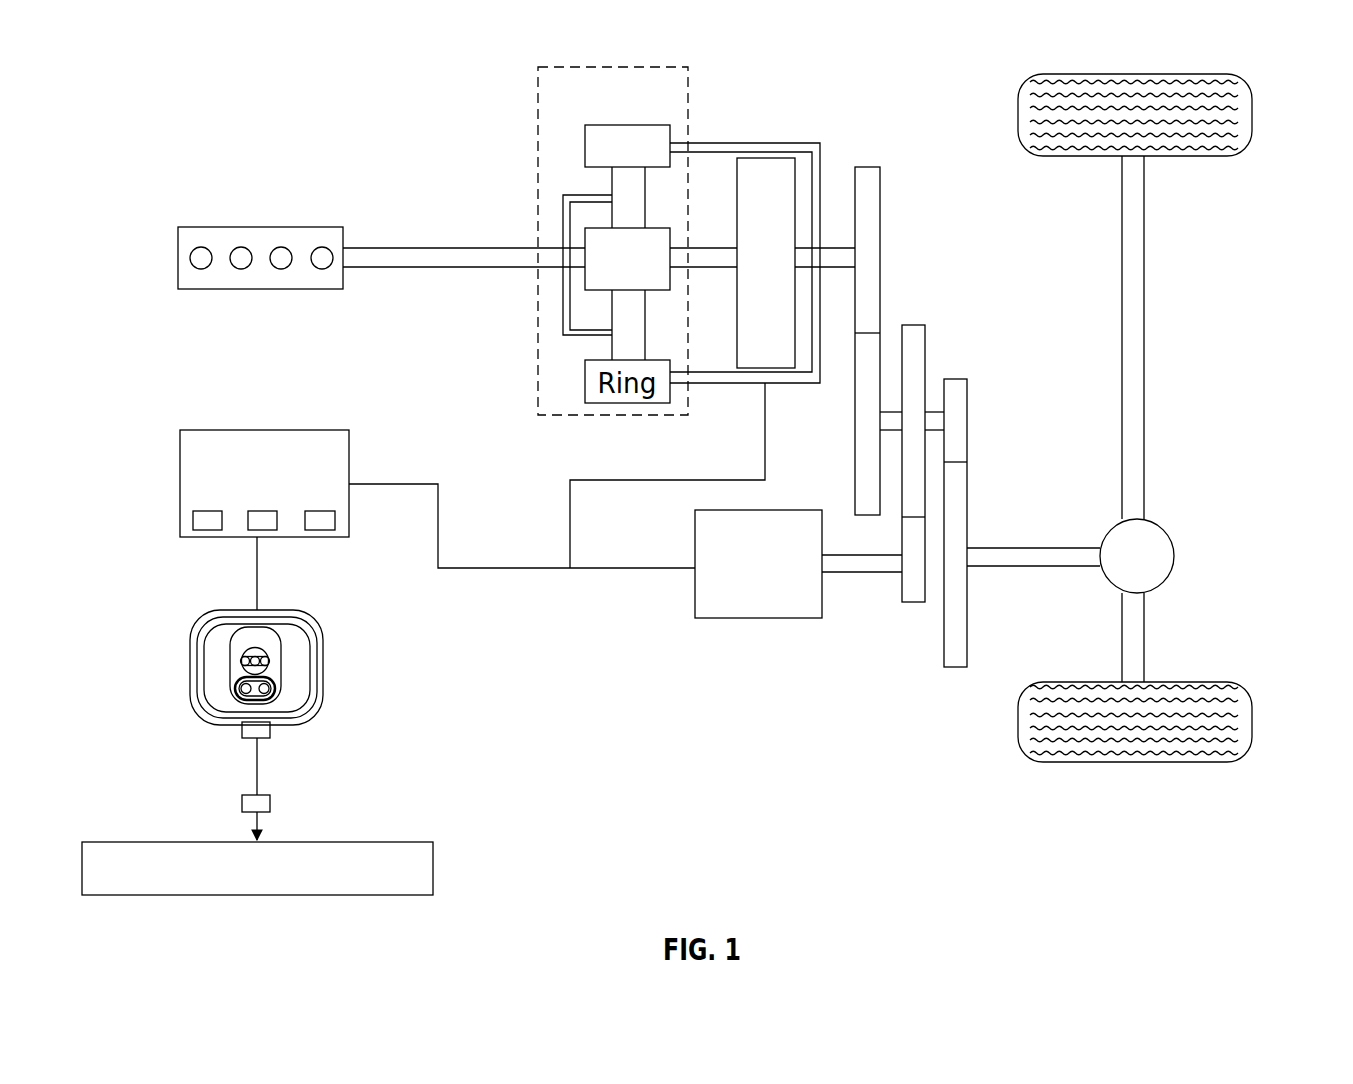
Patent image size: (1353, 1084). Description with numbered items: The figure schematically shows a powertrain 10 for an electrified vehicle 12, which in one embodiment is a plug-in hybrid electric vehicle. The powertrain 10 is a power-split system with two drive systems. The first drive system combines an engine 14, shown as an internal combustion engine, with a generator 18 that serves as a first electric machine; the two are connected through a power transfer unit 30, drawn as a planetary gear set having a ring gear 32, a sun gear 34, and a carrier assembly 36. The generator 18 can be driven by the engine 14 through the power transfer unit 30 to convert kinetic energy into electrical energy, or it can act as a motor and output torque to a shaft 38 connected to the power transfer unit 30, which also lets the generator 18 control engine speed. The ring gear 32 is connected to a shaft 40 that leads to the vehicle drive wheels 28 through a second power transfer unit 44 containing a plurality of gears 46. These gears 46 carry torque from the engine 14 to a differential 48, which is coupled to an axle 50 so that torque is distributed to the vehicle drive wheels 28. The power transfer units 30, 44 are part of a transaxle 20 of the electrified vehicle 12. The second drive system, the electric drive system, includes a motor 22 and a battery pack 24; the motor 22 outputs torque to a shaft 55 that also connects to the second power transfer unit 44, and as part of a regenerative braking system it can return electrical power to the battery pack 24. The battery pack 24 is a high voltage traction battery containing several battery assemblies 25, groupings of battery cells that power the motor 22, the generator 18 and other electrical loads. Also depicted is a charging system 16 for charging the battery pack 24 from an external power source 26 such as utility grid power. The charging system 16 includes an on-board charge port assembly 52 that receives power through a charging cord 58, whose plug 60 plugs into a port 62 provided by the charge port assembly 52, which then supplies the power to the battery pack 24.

The powertrain 10 is at (363, 97).
The electrified vehicle 12 is at (791, 72).
The engine 14 is at (258, 227).
The charging system 16 is at (246, 634).
The generator 18 is at (765, 158).
The transaxle 20 is at (832, 160).
The motor 22 is at (760, 618).
The battery pack 24 is at (258, 430).
The battery assemblies 25 is at (207, 530).
The external power source 26 is at (433, 880).
The vehicle drive wheels 28 is at (1252, 722).
The power transfer unit 30 is at (538, 395).
The ring gear 32 is at (585, 145).
The sun gear 34 is at (585, 258).
The carrier assembly 36 is at (563, 308).
The shaft 38 is at (725, 248).
The shaft 40 is at (826, 248).
The second power transfer unit 44 is at (944, 417).
The gears 46 is at (880, 290).
The differential 48 is at (1175, 556).
The axle 50 is at (1144, 337).
The charge port assembly 52 is at (290, 645).
The shaft 55 is at (862, 572).
The charging cord 58 is at (247, 781).
The plug 60 is at (272, 732).
The port 62 is at (272, 683).